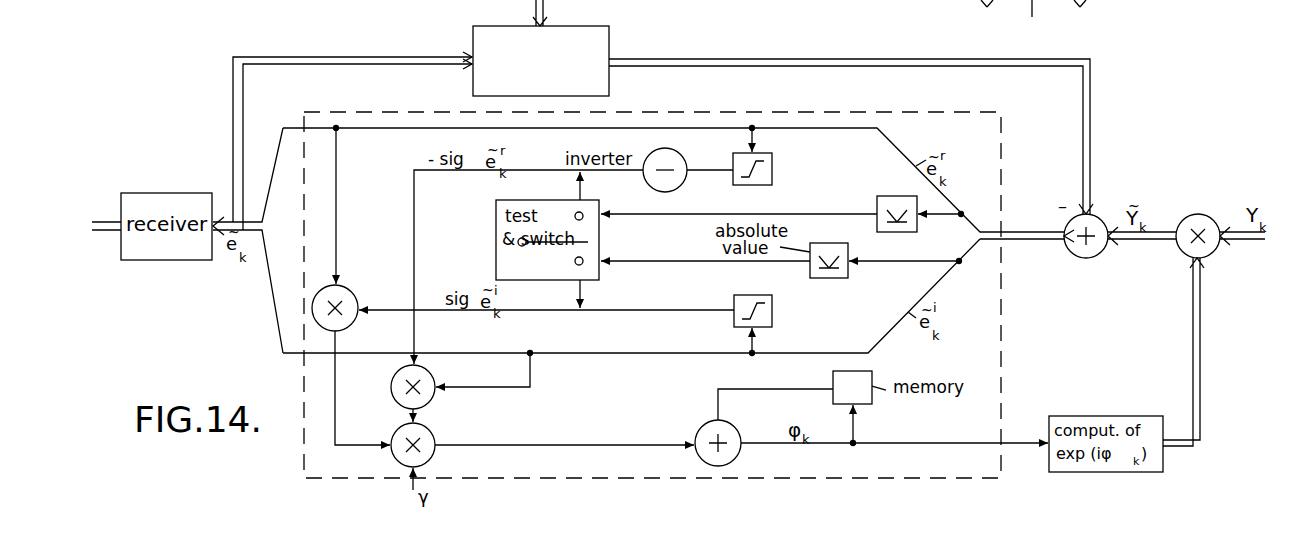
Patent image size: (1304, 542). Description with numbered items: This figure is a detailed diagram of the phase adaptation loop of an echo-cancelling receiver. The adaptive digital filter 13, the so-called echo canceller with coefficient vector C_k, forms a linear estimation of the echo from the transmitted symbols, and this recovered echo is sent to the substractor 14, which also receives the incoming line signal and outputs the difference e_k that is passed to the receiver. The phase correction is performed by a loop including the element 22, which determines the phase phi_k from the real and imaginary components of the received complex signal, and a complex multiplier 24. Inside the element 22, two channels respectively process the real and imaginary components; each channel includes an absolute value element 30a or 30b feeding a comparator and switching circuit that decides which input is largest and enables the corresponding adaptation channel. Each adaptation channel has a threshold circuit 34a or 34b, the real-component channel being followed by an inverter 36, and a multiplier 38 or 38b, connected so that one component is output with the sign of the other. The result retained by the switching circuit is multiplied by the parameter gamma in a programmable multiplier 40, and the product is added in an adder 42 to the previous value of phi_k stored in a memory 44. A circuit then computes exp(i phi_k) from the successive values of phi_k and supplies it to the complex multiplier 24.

The adaptive digital filter 13 is at (571, 27).
The substractor 14 is at (1086, 258).
The element determining phi_k 22 is at (672, 295).
The complex multiplier 24 is at (1210, 215).
The absolute value element 30a is at (892, 196).
The absolute value element 30b is at (825, 279).
The threshold circuit 34a is at (773, 170).
The threshold circuit 34b is at (773, 310).
The inverter 36 is at (688, 148).
The multiplier 38 is at (362, 292).
The multiplier 38b is at (393, 383).
The programmable multiplier 40 is at (391, 434).
The adder 42 is at (732, 425).
The memory 44 is at (872, 373).